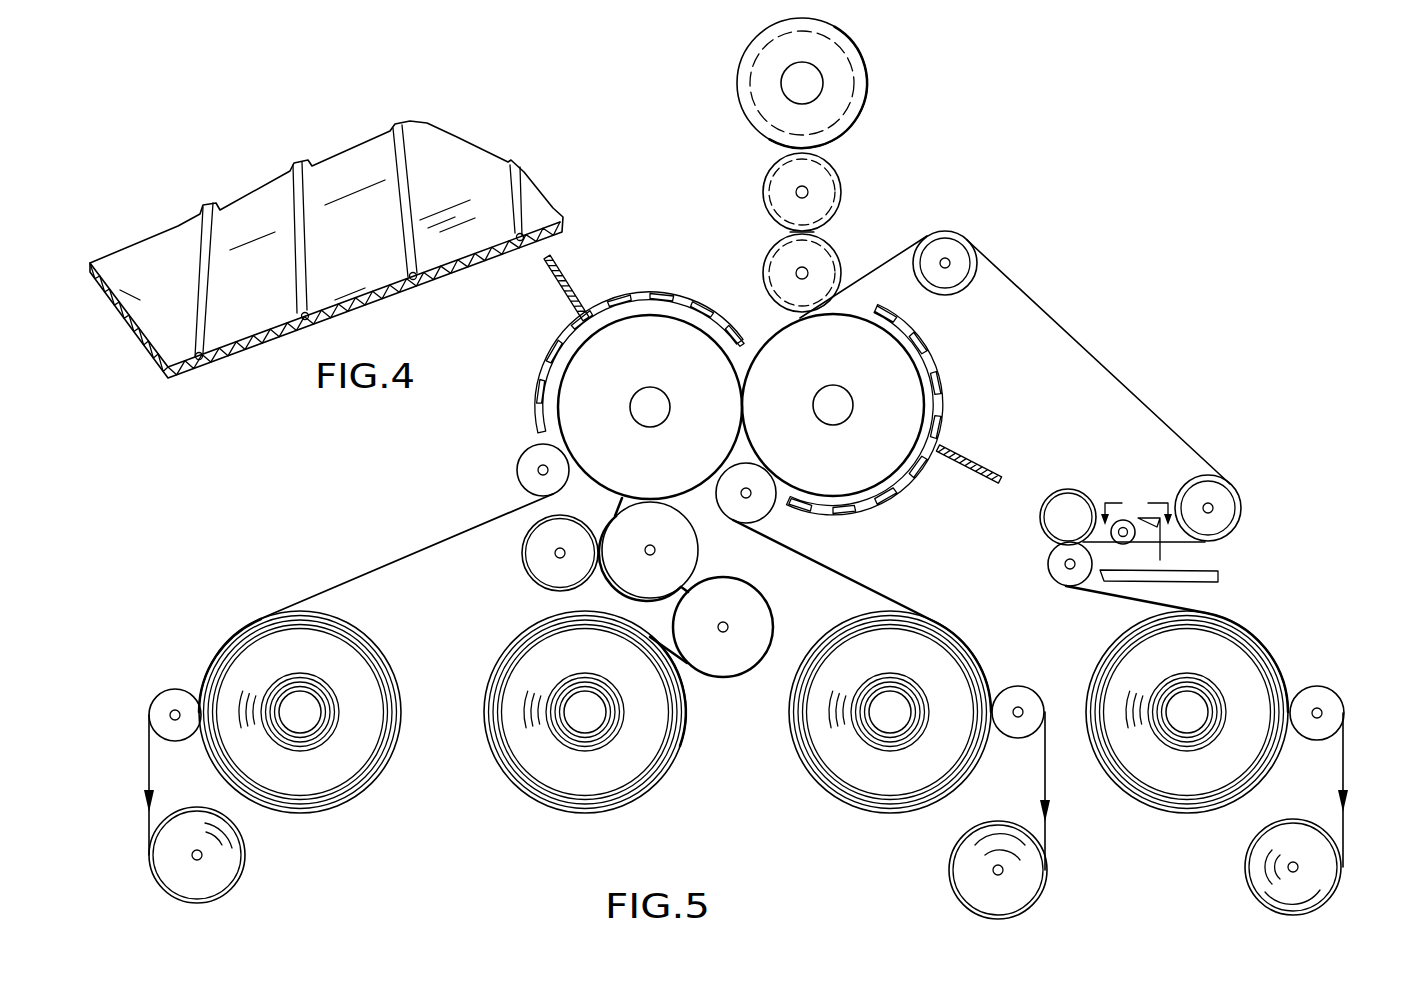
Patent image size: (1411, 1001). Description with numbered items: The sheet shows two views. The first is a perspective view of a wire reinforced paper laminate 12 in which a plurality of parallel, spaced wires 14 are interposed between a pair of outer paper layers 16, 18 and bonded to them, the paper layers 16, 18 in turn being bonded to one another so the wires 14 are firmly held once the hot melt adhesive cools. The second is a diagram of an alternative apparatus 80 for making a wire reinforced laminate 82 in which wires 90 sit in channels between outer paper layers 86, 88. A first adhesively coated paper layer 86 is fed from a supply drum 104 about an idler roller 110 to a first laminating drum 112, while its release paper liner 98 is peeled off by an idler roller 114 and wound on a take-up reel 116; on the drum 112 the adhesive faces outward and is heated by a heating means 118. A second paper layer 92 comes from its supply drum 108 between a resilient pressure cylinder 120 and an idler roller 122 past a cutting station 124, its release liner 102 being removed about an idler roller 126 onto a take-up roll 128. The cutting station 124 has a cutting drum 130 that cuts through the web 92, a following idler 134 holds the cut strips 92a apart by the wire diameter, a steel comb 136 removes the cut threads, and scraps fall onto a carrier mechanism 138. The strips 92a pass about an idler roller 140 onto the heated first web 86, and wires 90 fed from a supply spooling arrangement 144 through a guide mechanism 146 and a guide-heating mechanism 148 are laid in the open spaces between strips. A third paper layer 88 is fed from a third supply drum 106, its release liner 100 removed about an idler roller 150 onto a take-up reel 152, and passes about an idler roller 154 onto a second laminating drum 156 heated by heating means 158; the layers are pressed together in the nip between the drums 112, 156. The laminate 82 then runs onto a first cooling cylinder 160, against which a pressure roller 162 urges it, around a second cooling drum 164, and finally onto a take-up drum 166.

In FIG. 4, the wire reinforced paper laminate 12 is at (448, 144).
In FIG. 4, the wires 14 is at (203, 362).
In FIG. 4, the first outer paper web 16 is at (398, 293).
In FIG. 4, the outer paper layer 18 is at (450, 236).
In FIG. 5, the apparatus 80 is at (905, 189).
In FIG. 5, the wire reinforced paper laminate 82 is at (683, 672).
In FIG. 5, the first paper layer 86 is at (848, 578).
In FIG. 5, the third paper layer 88 is at (459, 533).
In FIG. 5, the wires 90 is at (820, 230).
In FIG. 5, the second paper layer 92 is at (1130, 600).
In FIG. 5, the cut strips 92a is at (1044, 311).
In FIG. 5, the release paper liner 98 is at (1046, 785).
In FIG. 5, the release paper liner 100 is at (149, 763).
In FIG. 5, the release paper liner 102 is at (1344, 745).
In FIG. 5, the supply drum 104 is at (891, 803).
In FIG. 5, the third supply drum 106 is at (383, 677).
In FIG. 5, the supply drum 108 is at (1197, 793).
In FIG. 5, the idler roller 110 is at (757, 507).
In FIG. 5, the first laminating drum 112 is at (878, 467).
In FIG. 5, the idler roller 114 is at (1058, 655).
In FIG. 5, the take-up reel 116 is at (1018, 795).
In FIG. 5, the heating means 118 is at (941, 359).
In FIG. 5, the resilient pressure cylinder 120 is at (1077, 459).
In FIG. 5, the idler roller 122 is at (1049, 557).
In FIG. 5, the cutting station 124 is at (1137, 497).
In FIG. 5, the idler roller 126 is at (1357, 657).
In FIG. 5, the release paper take-up roll 128 is at (1247, 866).
In FIG. 5, the cutting drum 130 is at (1131, 540).
In FIG. 5, the following idler 134 is at (1220, 500).
In FIG. 5, the steel comb 136 is at (1183, 547).
In FIG. 5, the carrier mechanism 138 is at (1220, 575).
In FIG. 5, the idler roller 140 is at (958, 290).
In FIG. 5, the supply spooling arrangement 144 is at (866, 69).
In FIG. 5, the guide mechanism 146 is at (839, 182).
In FIG. 5, the guide-heating mechanism 148 is at (836, 253).
In FIG. 5, the idler roller 150 is at (176, 695).
In FIG. 5, the take-up reel 152 is at (240, 855).
In FIG. 5, the idler roller 154 is at (517, 467).
In FIG. 5, the second laminating drum 156 is at (697, 462).
In FIG. 5, the heating means 158 is at (542, 369).
In FIG. 5, the first cooling cylinder 160 is at (688, 548).
In FIG. 5, the pressure roller 162 is at (540, 584).
In FIG. 5, the second cooling drum 164 is at (758, 602).
In FIG. 5, the take-up drum 166 is at (547, 698).